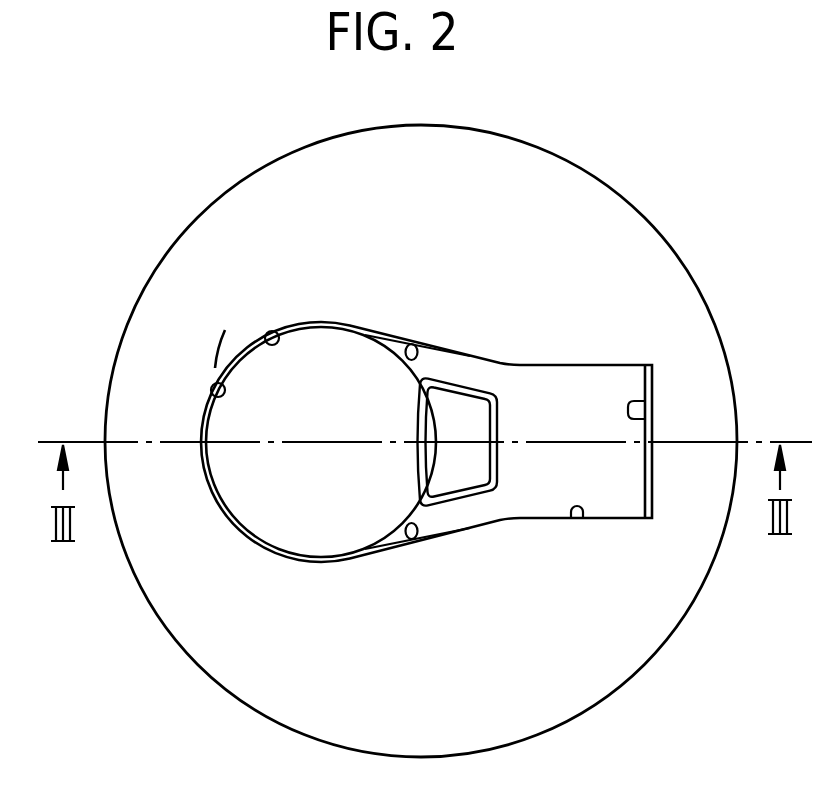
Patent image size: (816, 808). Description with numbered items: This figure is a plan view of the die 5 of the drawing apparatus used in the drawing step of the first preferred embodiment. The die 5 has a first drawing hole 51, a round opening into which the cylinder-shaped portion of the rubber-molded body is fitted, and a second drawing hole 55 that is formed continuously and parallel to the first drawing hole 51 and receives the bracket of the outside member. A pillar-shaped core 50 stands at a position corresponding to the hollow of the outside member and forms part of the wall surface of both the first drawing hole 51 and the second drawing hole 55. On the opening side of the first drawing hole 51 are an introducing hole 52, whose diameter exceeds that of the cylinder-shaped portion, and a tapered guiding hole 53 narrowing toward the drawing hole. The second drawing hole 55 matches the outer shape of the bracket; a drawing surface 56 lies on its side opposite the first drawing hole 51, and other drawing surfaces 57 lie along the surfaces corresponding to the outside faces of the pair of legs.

The die 5 is at (672, 238).
The pillar-shaped core 50 is at (470, 408).
The first drawing hole 51 is at (213, 382).
The introducing hole 52 is at (274, 331).
The tapered guiding hole 53 is at (235, 353).
The second drawing hole 55 is at (581, 520).
The drawing surface 56 is at (652, 396).
The drawing surfaces 57 is at (415, 345).